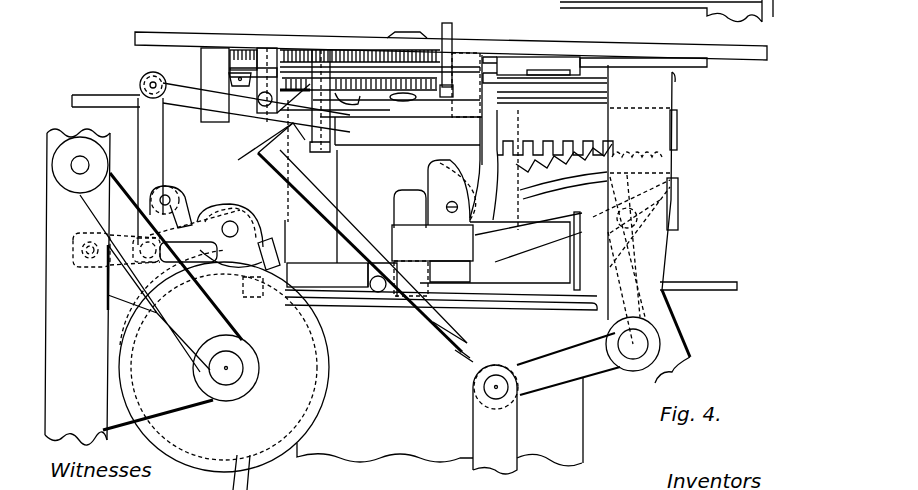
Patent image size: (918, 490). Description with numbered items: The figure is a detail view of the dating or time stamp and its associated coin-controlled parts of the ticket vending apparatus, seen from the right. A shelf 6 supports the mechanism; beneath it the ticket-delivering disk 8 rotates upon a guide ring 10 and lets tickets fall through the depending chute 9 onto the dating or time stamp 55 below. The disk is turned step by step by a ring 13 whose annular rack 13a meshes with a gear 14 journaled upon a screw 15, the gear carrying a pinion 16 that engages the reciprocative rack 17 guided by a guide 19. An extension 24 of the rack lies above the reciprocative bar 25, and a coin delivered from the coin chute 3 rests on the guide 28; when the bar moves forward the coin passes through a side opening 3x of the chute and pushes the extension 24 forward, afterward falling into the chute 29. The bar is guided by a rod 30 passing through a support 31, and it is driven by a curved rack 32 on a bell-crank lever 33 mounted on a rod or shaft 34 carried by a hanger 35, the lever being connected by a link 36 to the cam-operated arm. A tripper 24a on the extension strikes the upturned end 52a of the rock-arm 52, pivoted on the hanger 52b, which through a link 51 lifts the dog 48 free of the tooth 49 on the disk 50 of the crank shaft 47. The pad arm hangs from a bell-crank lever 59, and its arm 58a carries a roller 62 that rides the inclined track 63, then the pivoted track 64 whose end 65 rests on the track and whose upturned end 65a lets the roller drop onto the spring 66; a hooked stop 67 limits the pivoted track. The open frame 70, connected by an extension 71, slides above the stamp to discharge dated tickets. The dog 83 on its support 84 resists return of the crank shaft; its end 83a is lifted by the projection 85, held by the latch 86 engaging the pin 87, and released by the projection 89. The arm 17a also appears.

The shelf 6 is at (636, 48).
The guide ring 10 is at (680, 11).
The extension or rod 30 is at (100, 100).
The tripper 24a is at (236, 108).
The link 51 is at (147, 122).
The pin 87 is at (108, 298).
The support 31 is at (215, 85).
The ticket-delivering disk 8 is at (241, 62).
The rock-arm 52 is at (180, 83).
The extension 24 is at (242, 87).
The hanger 52b is at (293, 48).
The annular teeth or rack 13a is at (305, 50).
The gear 14 is at (372, 50).
The ring 13 is at (512, 57).
The coin chute 3 is at (453, 28).
The side opening 3x is at (466, 85).
The screw 15 is at (403, 100).
The pinion 16 is at (360, 88).
The upturned free end 52a is at (388, 97).
The reciprocative rack 17 is at (428, 97).
The guide 28 is at (454, 160).
The guide 19 is at (600, 97).
The reciprocative bar 25 is at (489, 170).
The curved rack 32 is at (564, 161).
The end of pivoted track 65 is at (563, 190).
The bell-crank lever 33 is at (626, 246).
The hanger 35 is at (642, 192).
The bell-crank lever 59 is at (676, 341).
The extension 71 is at (693, 287).
The stop 67 is at (566, 278).
The pivoted track or way 64 is at (490, 207).
The upturned forward end 65a is at (430, 190).
The roller 62 is at (407, 250).
The track or way 63 is at (495, 252).
The arm 58a is at (528, 237).
The open frame 70 is at (441, 286).
The spring 66 is at (366, 279).
The projection or pin 85 is at (311, 206).
The guide or chute 9 is at (321, 250).
The chute 29 is at (365, 242).
The arm 17a is at (258, 151).
The latch 86 is at (176, 207).
The dog 83 is at (186, 228).
The end of dog 83a is at (268, 240).
The support 84 is at (244, 284).
The dog 48 is at (110, 266).
The disk 50 is at (290, 305).
The crank shaft 47 is at (236, 367).
The dating or time stamp 55 is at (440, 415).
The link 36 is at (478, 422).
The rod or shaft 34 is at (631, 354).
The projection 89 is at (258, 472).
The notch or tooth 49 is at (208, 485).